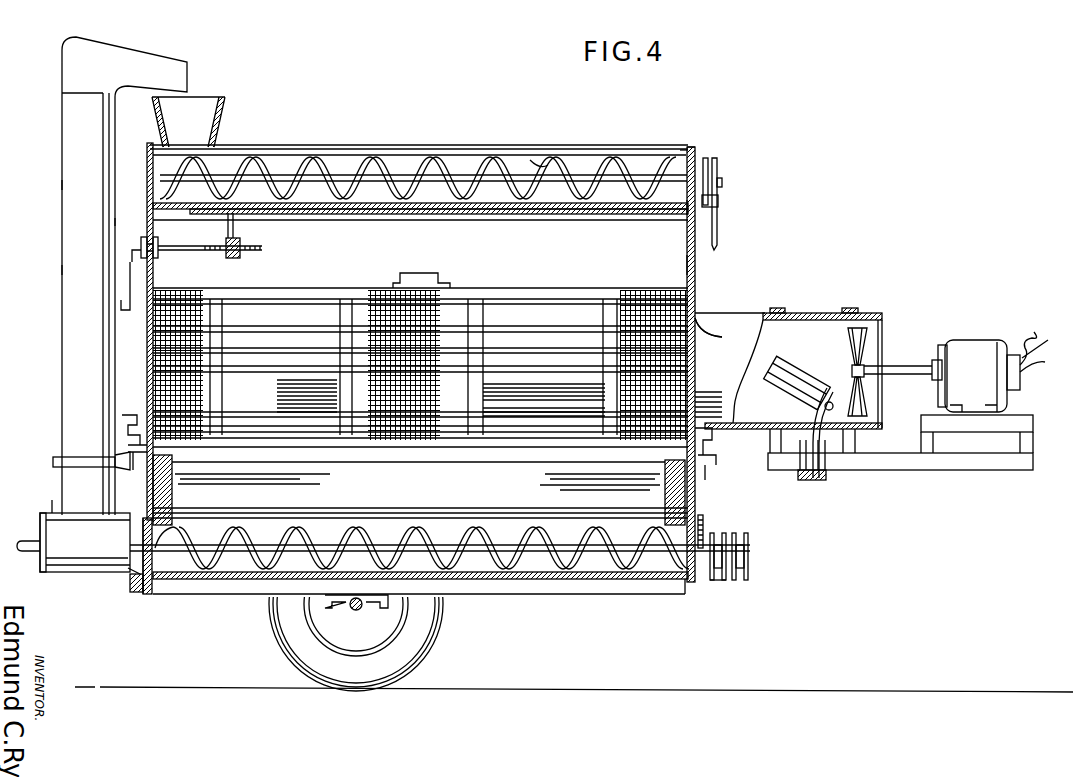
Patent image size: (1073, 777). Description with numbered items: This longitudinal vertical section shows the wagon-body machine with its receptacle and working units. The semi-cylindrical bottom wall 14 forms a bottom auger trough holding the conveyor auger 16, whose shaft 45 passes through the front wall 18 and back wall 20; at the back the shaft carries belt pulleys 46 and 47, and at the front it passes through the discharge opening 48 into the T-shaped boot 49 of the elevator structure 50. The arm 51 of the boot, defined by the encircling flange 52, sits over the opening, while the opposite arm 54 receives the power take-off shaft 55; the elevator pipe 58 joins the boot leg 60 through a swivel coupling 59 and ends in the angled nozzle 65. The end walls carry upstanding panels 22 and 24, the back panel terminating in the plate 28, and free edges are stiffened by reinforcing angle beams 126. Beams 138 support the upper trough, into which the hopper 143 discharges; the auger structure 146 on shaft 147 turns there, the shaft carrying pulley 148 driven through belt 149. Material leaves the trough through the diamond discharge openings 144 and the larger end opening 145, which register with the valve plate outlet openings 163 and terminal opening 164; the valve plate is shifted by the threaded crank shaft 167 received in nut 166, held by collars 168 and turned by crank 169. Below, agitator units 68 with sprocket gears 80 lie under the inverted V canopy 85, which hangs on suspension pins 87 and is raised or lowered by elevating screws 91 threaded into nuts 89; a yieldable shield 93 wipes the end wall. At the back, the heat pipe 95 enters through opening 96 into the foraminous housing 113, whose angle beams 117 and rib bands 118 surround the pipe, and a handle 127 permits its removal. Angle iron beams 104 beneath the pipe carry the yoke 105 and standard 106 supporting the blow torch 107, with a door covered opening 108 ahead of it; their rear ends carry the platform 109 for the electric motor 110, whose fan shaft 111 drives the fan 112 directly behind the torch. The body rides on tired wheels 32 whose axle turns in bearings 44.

The bottom wall portion 14 is at (570, 583).
The auger 16 is at (628, 573).
The front wall 18 is at (147, 358).
The back wall 20 is at (697, 298).
The upstanding panel 22 is at (148, 222).
The upstanding panel 24 is at (697, 265).
The back upstanding plate 28 is at (699, 157).
The tired wheel 32 is at (425, 652).
The bearings 44 is at (345, 608).
The shaft 45 is at (505, 557).
The belt pulley 46 is at (748, 568).
The belt pulley 47 is at (720, 580).
The discharge opening 48 is at (136, 575).
The T-shaped boot 49 is at (98, 560).
The elevator structure 50 is at (55, 189).
The arm of the boot 51 is at (133, 592).
The encircling flange 52 is at (150, 580).
The opposite arm of the boot 54 is at (53, 535).
The power take-off shaft 55 is at (28, 548).
The pipe 58 is at (64, 270).
The swivel coupling 59 is at (50, 454).
The leg of the boot housing 60 is at (52, 512).
The angled nozzle 65 is at (80, 72).
The agitator units 68 is at (285, 538).
The sprocket gears 80 is at (713, 528).
The canopy structure 85 is at (544, 473).
The suspension pins 87 is at (178, 455).
The threaded nut 89 is at (120, 466).
The elevating screw 91 is at (128, 443).
The yieldable shield 93 is at (668, 485).
The heat pipe 95 is at (870, 315).
The opening 96 is at (715, 334).
The angle iron beams 104 is at (990, 465).
The transverse yoke 105 is at (818, 482).
The standard 106 is at (818, 432).
The blow torch 107 is at (790, 372).
The door covered opening 108 is at (745, 424).
The platform 109 is at (1010, 420).
The electric motor 110 is at (975, 340).
The fan shaft 111 is at (903, 382).
The fan 112 is at (862, 345).
The foraminous walled housing 113 is at (539, 281).
The angle beam 117 is at (266, 372).
The circular rib bands 118 is at (482, 365).
The reinforcing angle beams 126 is at (683, 150).
The handle 127 is at (440, 272).
The angle beams 138 is at (320, 145).
The hopper 143 is at (215, 128).
The discharge openings 144 is at (430, 214).
The end opening 145 is at (720, 192).
The auger structure 146 is at (543, 163).
The shaft 147 is at (496, 178).
The belt pulley 148 is at (717, 168).
The belt 149 is at (717, 224).
The outlet openings 163 is at (285, 212).
The terminal large opening 164 is at (685, 207).
The nut 166 is at (240, 252).
The threaded crank shaft 167 is at (203, 250).
The collars 168 is at (140, 243).
The crank 169 is at (118, 290).